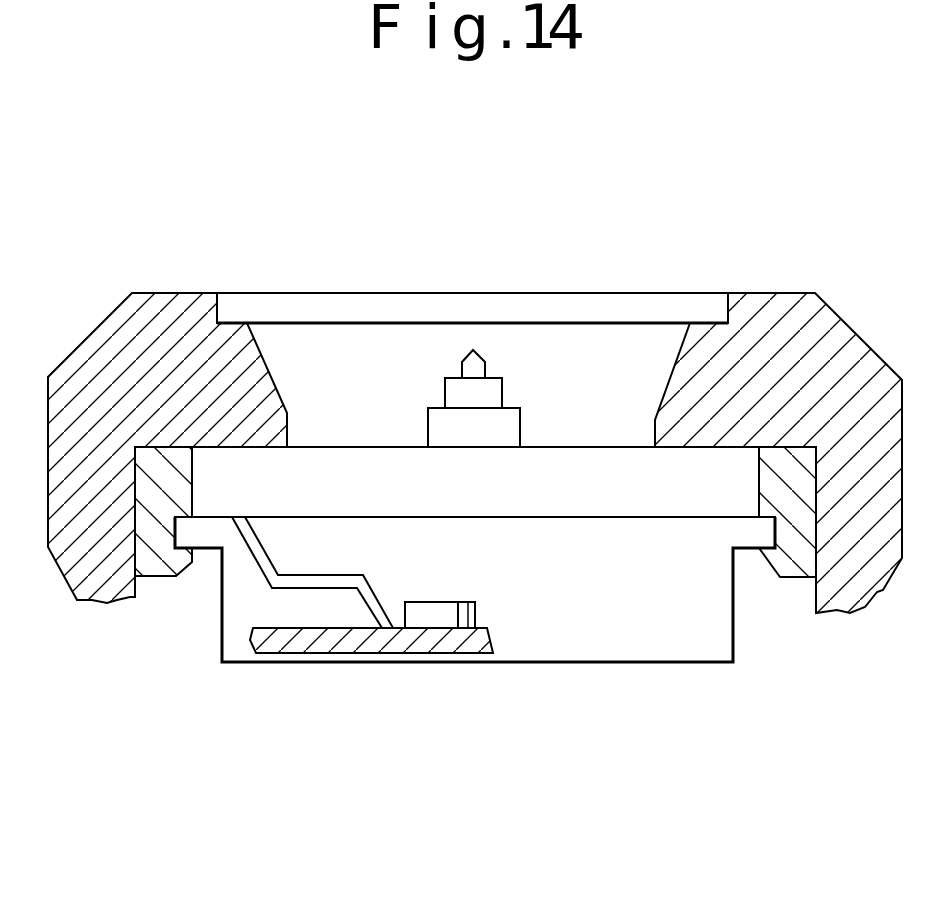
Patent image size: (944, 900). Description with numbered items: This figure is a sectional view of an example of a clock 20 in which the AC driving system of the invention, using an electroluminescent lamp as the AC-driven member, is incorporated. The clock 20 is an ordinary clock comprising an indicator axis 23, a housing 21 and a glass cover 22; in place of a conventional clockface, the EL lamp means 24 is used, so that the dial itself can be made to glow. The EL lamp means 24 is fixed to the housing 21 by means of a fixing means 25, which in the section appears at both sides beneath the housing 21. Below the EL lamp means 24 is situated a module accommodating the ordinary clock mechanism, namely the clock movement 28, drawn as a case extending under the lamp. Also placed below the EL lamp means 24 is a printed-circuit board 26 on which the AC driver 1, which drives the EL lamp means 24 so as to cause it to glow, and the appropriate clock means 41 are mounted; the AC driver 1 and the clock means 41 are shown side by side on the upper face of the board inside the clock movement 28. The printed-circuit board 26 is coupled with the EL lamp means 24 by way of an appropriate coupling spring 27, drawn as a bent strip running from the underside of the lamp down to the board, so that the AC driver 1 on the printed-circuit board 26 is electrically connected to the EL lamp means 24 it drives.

The clock 20 is at (671, 210).
The housing 21 is at (157, 300).
The glass cover 22 is at (678, 318).
The indicator axis 23 is at (458, 392).
The EL lamp means 24 is at (558, 477).
The fixing means 25 is at (160, 560).
The printed-circuit board 26 is at (375, 648).
The coupling spring 27 is at (333, 582).
The clock movement 28 is at (568, 643).
The AC driver 1 is at (430, 610).
The clock means 41 is at (467, 610).